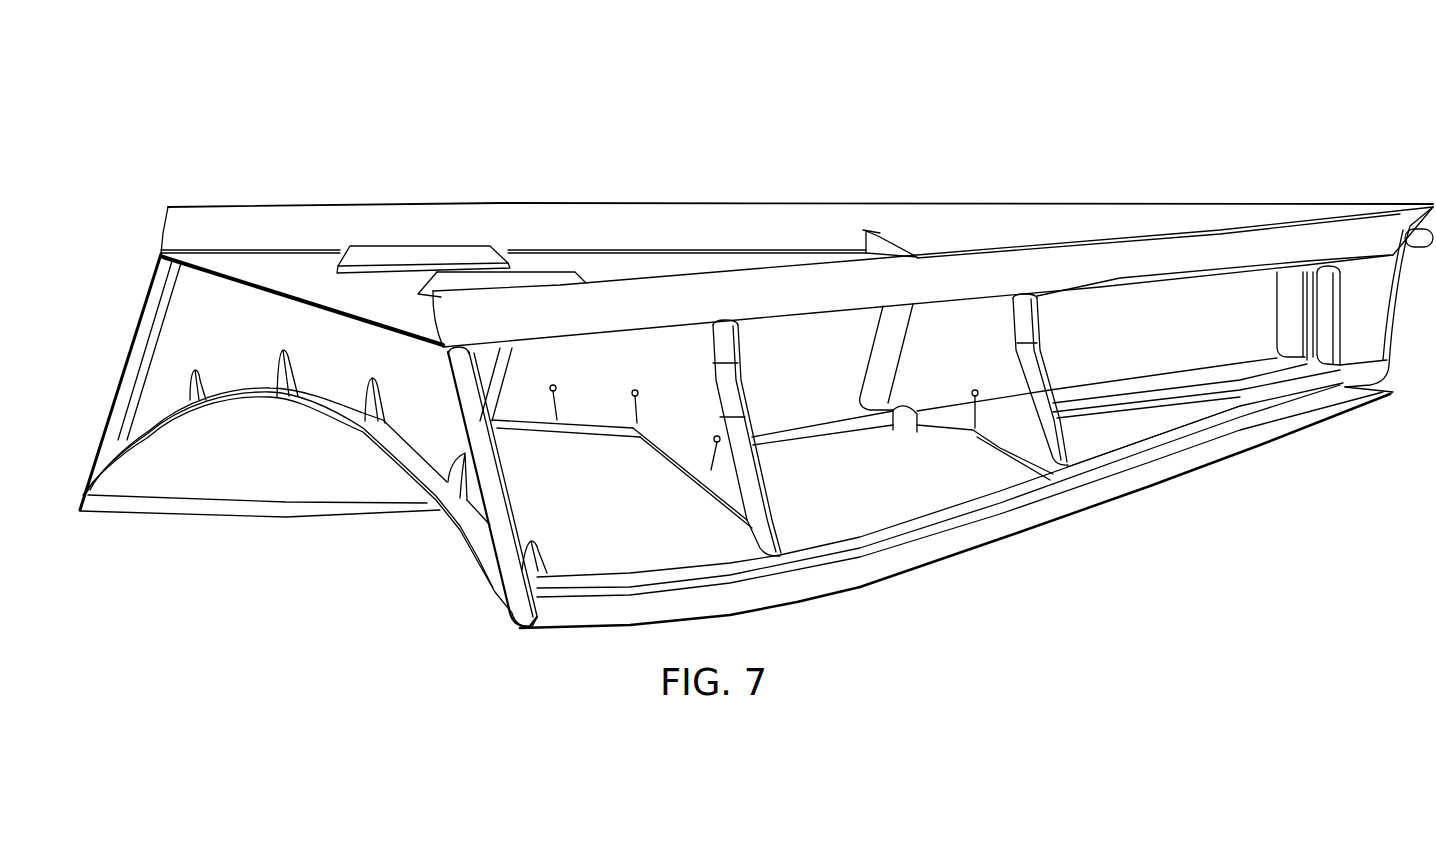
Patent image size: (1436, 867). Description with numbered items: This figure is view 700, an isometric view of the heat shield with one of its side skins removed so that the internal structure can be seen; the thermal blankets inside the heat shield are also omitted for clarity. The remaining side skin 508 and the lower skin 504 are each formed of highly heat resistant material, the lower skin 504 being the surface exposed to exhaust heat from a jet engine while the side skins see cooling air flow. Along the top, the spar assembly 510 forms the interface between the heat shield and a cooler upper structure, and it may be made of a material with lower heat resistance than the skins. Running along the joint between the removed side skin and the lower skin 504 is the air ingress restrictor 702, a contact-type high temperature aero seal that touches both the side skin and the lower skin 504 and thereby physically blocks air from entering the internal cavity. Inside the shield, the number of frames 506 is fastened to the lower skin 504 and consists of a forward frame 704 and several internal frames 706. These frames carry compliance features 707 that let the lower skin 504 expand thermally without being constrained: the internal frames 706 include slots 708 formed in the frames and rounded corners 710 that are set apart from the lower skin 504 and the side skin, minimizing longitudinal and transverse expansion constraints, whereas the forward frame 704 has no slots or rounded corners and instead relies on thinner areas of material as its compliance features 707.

The view 700 is at (336, 110).
The spar assembly 510 is at (790, 228).
The side skin 508 is at (117, 276).
The number of frames 506 is at (195, 330).
The forward frame 704 is at (363, 381).
The lower skin 504 is at (273, 478).
The compliance features 707 is at (628, 401).
The internal frames 706 is at (657, 397).
The slots 708 is at (968, 404).
The rounded corners 710 is at (917, 432).
The air ingress restrictor 702 is at (1017, 500).